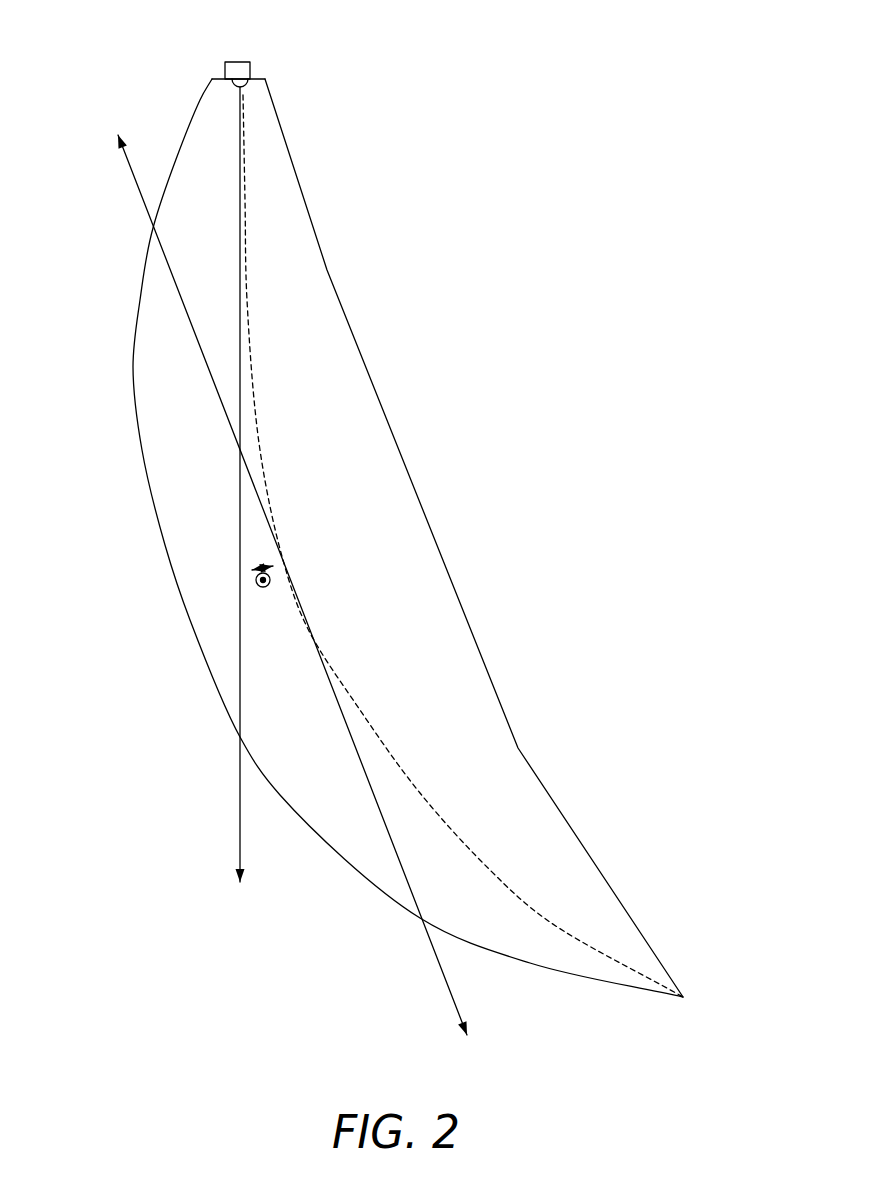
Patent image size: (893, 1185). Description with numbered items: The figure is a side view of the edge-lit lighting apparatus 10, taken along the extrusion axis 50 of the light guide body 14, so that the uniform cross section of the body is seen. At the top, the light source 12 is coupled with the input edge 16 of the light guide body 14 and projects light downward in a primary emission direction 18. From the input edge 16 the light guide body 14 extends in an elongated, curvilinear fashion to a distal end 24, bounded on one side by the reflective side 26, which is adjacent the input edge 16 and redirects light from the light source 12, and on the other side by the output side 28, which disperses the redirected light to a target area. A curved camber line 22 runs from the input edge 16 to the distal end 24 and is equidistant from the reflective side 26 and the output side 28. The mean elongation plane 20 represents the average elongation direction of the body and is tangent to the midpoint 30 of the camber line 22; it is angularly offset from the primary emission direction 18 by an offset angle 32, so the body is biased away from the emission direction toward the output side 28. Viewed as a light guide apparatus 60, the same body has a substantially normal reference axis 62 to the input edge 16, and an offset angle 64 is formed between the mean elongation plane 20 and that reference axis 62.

The edge-lit lighting apparatus 10 is at (546, 183).
The light source 12 is at (238, 62).
The light guide body 14 is at (402, 447).
The input edge 16 is at (222, 78).
The primary emission direction 18 is at (240, 848).
The mean elongation plane 20 is at (142, 198).
The camber line 22 is at (542, 913).
The distal end 24 is at (685, 997).
The reflective side 26 is at (180, 642).
The output side 28 is at (386, 360).
The midpoint 30 is at (295, 588).
The offset angle 32 is at (259, 572).
The extrusion axis 50 is at (258, 588).
The light guide apparatus 60 is at (462, 282).
The substantially normal reference axis 62 is at (240, 793).
The offset angle 64 is at (276, 562).